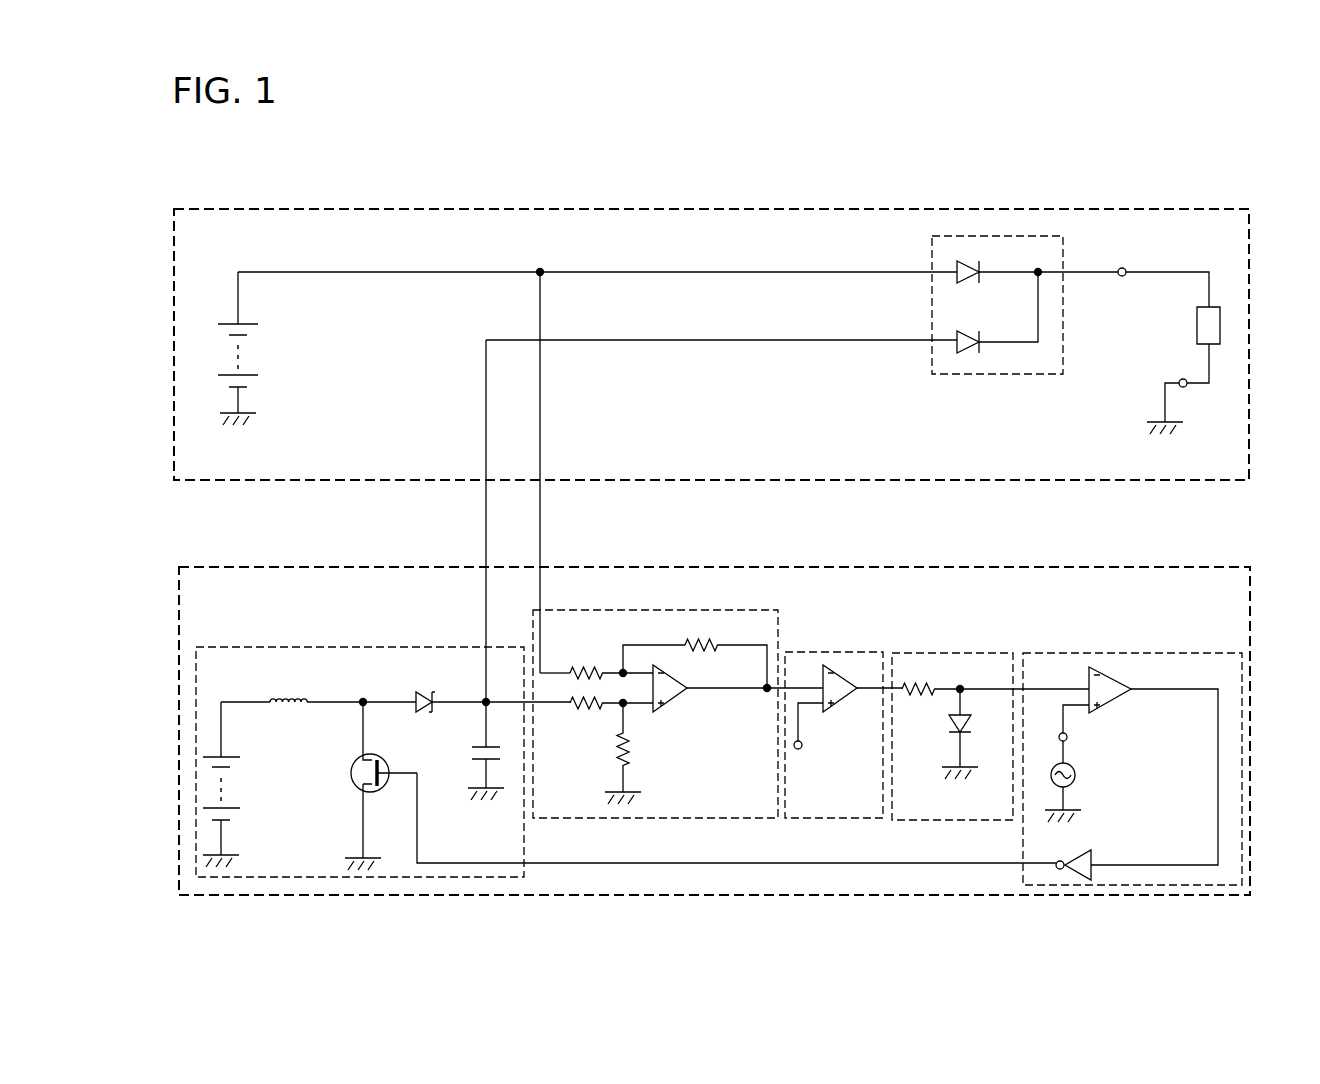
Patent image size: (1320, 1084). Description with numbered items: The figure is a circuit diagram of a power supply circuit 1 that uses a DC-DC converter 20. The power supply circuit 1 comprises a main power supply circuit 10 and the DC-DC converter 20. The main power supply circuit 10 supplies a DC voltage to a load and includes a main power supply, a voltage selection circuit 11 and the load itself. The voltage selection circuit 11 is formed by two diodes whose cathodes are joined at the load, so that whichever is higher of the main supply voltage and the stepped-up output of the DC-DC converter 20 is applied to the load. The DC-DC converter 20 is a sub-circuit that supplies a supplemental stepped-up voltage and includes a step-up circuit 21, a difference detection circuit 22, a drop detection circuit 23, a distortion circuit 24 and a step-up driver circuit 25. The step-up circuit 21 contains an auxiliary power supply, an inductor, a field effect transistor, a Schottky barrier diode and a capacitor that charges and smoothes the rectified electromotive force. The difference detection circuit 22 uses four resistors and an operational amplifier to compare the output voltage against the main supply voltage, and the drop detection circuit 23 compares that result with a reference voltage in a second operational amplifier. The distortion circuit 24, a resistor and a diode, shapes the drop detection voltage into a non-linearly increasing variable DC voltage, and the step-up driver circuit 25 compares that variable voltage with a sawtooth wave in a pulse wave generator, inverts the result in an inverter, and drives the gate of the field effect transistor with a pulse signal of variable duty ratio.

The power supply circuit 1 is at (1172, 189).
The main power supply circuit 10 is at (884, 209).
The voltage selection circuit 11 is at (1063, 241).
The DC-DC converter 20 is at (990, 567).
The step-up circuit 21 is at (432, 644).
The difference detection circuit 22 is at (778, 614).
The drop detection circuit 23 is at (853, 650).
The distortion circuit 24 is at (955, 651).
The step-up driver circuit 25 is at (1190, 651).